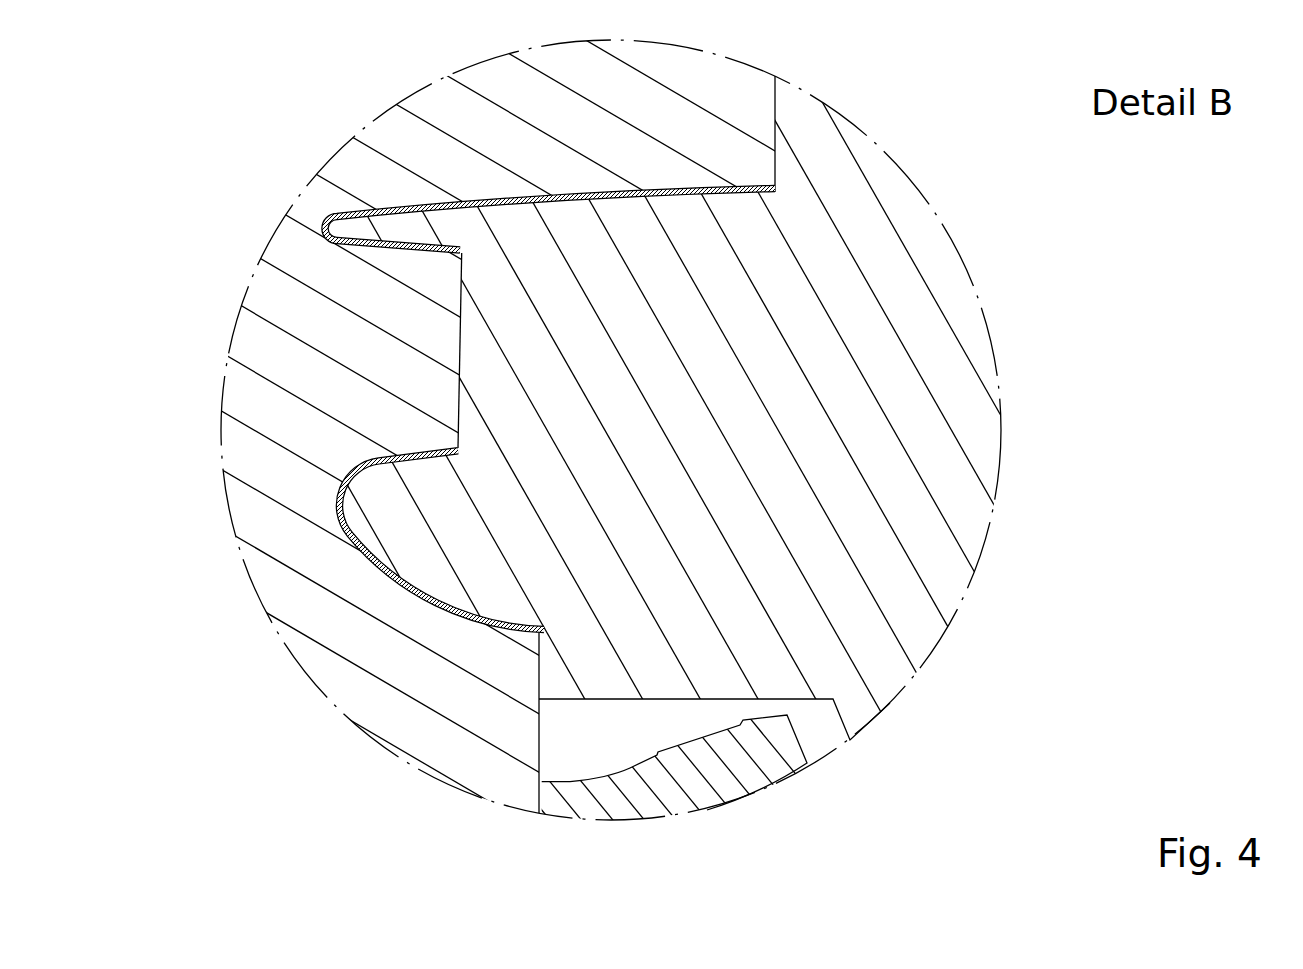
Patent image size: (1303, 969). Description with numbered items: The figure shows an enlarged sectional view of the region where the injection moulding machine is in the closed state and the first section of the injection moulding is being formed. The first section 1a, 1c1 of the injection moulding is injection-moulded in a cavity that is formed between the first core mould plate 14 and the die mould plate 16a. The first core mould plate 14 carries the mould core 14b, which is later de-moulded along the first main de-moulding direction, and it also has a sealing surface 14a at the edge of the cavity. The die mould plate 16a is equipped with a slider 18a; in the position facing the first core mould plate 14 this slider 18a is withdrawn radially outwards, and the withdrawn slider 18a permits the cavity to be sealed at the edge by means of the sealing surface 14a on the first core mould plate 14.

The first section of the injection moulding 1a is at (632, 185).
The first section of the injection moulding 1c1 is at (479, 624).
The first core mould plate 14 is at (974, 294).
The sealing surface 14a is at (539, 683).
The mould core 14b is at (560, 470).
The die mould plate 16a is at (232, 382).
The slider 18a is at (767, 790).